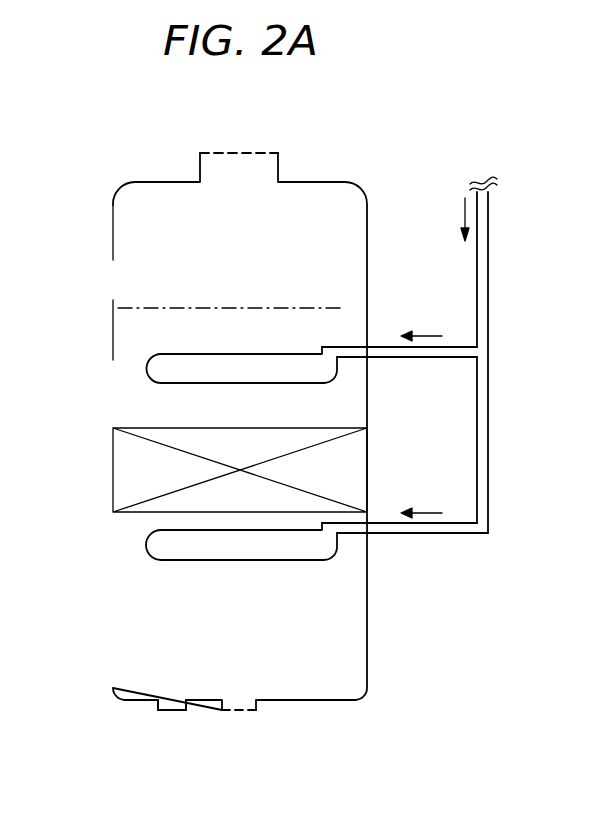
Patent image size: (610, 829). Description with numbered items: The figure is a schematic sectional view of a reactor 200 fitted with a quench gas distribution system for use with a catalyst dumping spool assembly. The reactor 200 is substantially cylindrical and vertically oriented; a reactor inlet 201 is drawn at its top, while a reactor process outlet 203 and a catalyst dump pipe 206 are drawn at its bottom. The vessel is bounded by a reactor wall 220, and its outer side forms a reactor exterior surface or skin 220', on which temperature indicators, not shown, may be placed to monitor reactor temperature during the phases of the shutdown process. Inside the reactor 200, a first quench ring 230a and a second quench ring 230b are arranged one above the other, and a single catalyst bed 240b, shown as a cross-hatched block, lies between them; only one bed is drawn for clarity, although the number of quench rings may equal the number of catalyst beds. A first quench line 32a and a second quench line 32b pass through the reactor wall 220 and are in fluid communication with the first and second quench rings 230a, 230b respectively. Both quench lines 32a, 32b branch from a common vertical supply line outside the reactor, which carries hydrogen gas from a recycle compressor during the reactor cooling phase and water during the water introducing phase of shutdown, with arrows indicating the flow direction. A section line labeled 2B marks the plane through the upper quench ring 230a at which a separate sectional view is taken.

The reactor 200 is at (258, 252).
The reactor inlet 201 is at (243, 144).
The reactor process outlet 203 is at (238, 730).
The catalyst dump pipe 206 is at (172, 730).
The reactor exterior surface or skin 220' is at (74, 232).
The reactor wall 220 is at (75, 330).
The section line 2B- 2B is at (133, 328).
The first quench ring 230a is at (154, 389).
The second quench ring 230b is at (154, 566).
The catalyst bed 240b is at (143, 470).
The first quench line 32a is at (390, 359).
The second quench line 32b is at (390, 536).